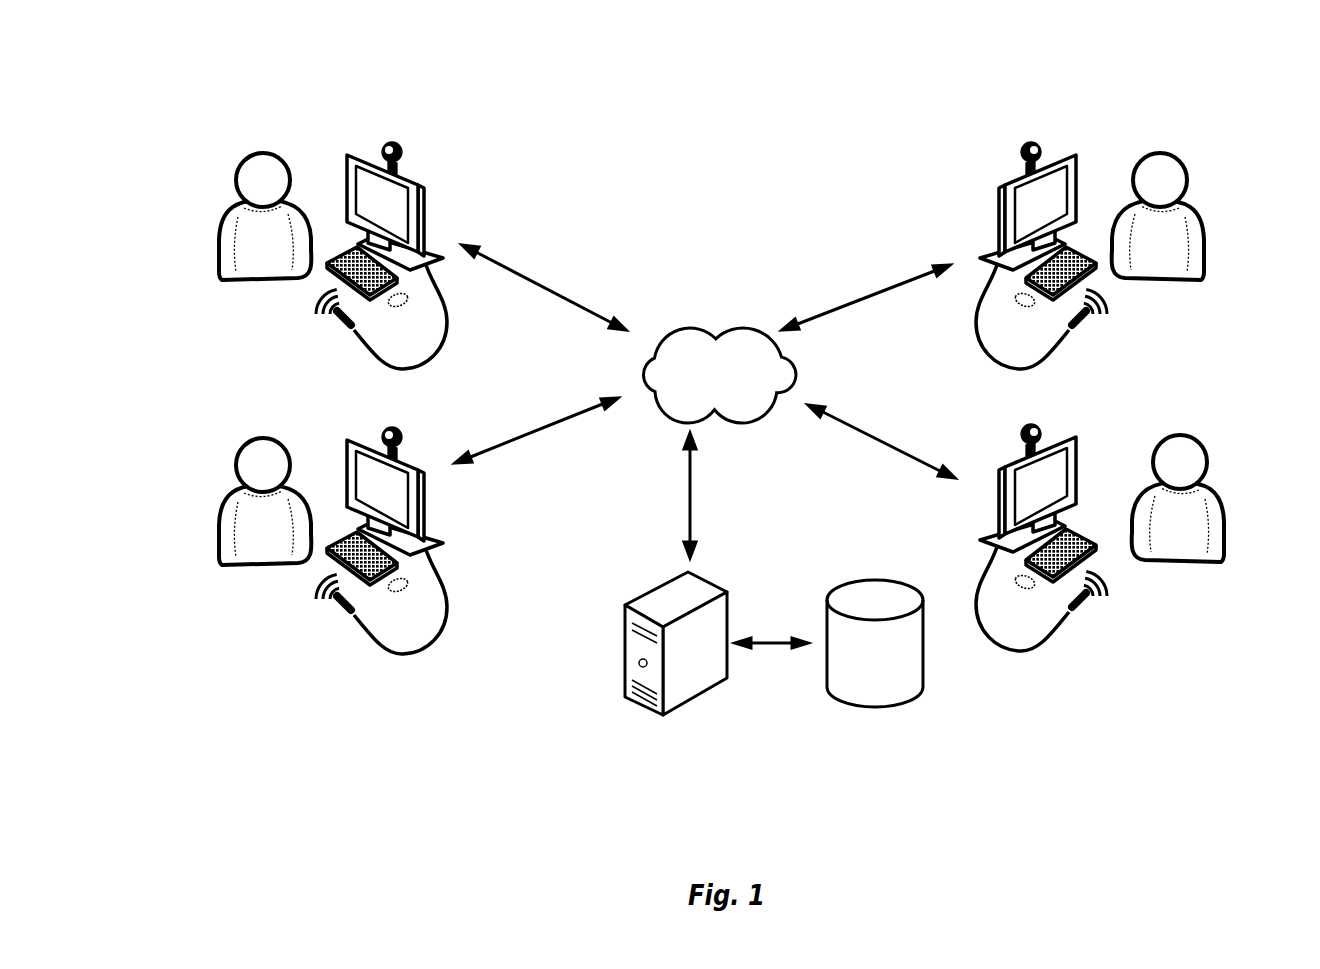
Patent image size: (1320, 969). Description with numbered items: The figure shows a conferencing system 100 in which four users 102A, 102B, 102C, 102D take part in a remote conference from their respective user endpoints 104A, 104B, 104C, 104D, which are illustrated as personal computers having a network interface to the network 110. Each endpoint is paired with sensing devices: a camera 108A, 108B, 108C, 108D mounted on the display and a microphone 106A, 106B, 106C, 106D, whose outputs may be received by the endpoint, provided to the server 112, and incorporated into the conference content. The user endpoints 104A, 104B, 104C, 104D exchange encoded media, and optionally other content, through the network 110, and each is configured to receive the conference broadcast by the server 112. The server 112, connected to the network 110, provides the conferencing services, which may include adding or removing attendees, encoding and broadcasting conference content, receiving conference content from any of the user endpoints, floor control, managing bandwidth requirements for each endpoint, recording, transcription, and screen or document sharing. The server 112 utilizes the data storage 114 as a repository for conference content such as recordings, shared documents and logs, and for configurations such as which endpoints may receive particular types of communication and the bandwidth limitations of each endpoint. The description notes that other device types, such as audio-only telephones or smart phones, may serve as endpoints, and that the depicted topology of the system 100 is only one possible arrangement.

The system 100 is at (1232, 56).
The user 102A is at (229, 208).
The user 102B is at (229, 492).
The user 102C is at (1192, 208).
The user 102D is at (1212, 490).
The user endpoint 104A is at (420, 182).
The user endpoint 104B is at (420, 467).
The user endpoint 104C is at (1068, 180).
The user endpoint 104D is at (1068, 462).
The microphone 106A is at (352, 327).
The microphone 106B is at (352, 612).
The microphone 106C is at (1071, 328).
The microphone 106D is at (1071, 610).
The camera 108A is at (396, 149).
The camera 108B is at (396, 434).
The camera 108C is at (1024, 148).
The camera 108D is at (1024, 430).
The network 110 is at (740, 328).
The server 112 is at (640, 600).
The data storage 114 is at (923, 650).